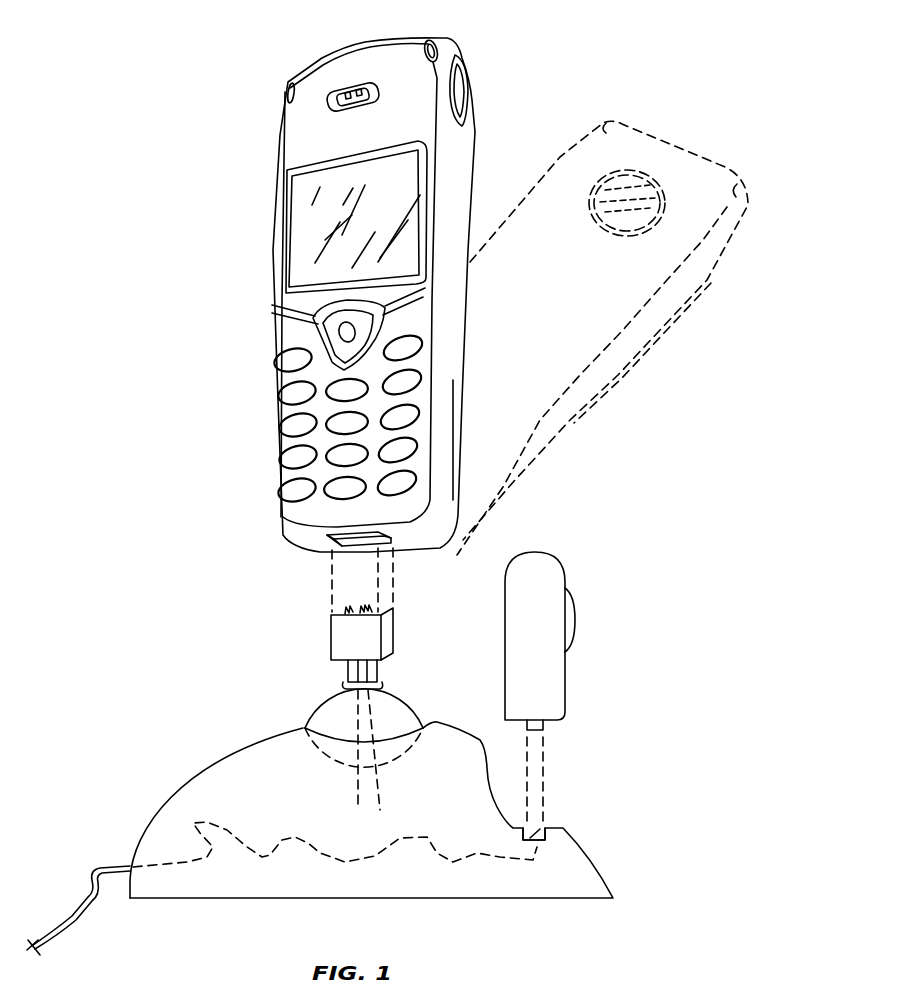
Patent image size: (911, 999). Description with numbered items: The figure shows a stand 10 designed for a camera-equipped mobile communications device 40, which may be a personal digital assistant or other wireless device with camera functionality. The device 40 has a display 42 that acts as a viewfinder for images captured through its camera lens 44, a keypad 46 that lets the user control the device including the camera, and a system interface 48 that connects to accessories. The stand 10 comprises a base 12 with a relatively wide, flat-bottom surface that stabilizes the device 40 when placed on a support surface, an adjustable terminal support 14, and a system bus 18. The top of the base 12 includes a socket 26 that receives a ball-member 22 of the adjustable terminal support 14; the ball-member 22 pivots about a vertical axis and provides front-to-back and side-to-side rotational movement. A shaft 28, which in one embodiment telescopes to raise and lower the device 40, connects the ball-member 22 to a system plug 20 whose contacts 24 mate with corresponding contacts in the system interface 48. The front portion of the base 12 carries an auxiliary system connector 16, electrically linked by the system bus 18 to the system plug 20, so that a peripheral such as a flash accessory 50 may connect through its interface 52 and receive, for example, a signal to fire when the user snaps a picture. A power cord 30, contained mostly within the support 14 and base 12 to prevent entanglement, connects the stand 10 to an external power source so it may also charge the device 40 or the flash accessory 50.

The stand 10 is at (316, 808).
The base 12 is at (167, 807).
The adjustable terminal support 14 is at (338, 679).
The auxiliary system connector 16 is at (556, 823).
The system bus 18 is at (471, 869).
The system plug 20 is at (387, 633).
The ball-member 22 is at (395, 712).
The contacts 24 is at (345, 609).
The socket 26 is at (313, 788).
The shaft 28 is at (352, 672).
The power cord 30 is at (78, 898).
The camera-equipped mobile communications device 40 is at (548, 73).
The display 42 is at (302, 223).
The camera lens 44 is at (640, 177).
The keypad 46 is at (236, 406).
The system interface 48 is at (350, 540).
The flash accessory 50 is at (548, 567).
The interface 52 is at (540, 728).